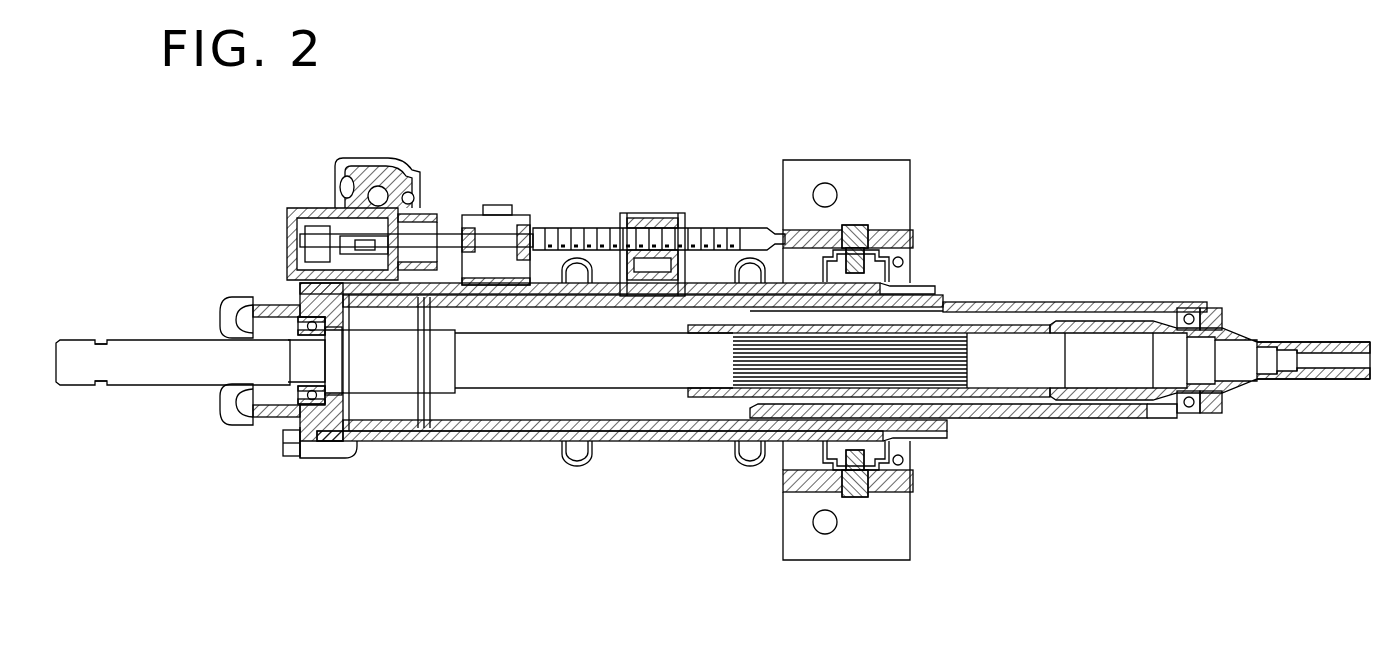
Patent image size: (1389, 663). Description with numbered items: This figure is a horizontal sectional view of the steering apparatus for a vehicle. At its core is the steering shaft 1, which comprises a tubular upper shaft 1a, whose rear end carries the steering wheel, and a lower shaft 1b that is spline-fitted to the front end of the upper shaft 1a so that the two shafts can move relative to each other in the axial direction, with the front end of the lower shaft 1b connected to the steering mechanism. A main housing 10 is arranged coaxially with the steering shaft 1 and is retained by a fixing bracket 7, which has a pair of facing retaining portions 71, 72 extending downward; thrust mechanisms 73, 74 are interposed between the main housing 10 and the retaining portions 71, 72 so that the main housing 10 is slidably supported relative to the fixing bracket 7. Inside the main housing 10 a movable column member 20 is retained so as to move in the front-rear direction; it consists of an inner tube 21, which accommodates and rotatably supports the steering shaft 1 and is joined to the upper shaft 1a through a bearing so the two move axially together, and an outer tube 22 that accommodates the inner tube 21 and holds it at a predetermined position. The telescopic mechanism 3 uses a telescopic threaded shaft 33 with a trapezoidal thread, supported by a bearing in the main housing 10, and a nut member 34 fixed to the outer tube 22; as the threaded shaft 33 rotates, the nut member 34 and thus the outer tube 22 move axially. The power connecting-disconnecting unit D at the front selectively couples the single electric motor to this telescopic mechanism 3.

The steering shaft 1 is at (1260, 327).
The upper shaft 1a is at (1267, 383).
The lower shaft 1b is at (133, 370).
The telescopic mechanism 3 is at (575, 213).
The fixing bracket 7 is at (850, 159).
The main housing 10 is at (385, 445).
The movable column member 20 is at (1089, 287).
The inner tube 21 is at (1078, 418).
The outer tube 22 is at (930, 296).
The telescopic threaded shaft 33 is at (707, 236).
The nut member 34 is at (648, 222).
The retaining portion 71 is at (905, 237).
The retaining portion 72 is at (905, 488).
The thrust mechanism 73 is at (890, 268).
The thrust mechanism 74 is at (880, 453).
The power connecting-disconnecting unit D is at (316, 188).